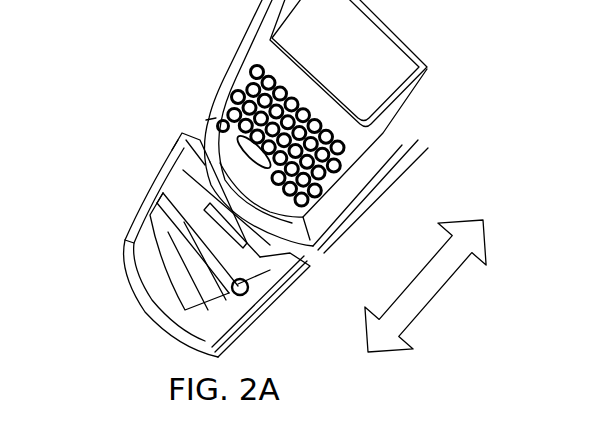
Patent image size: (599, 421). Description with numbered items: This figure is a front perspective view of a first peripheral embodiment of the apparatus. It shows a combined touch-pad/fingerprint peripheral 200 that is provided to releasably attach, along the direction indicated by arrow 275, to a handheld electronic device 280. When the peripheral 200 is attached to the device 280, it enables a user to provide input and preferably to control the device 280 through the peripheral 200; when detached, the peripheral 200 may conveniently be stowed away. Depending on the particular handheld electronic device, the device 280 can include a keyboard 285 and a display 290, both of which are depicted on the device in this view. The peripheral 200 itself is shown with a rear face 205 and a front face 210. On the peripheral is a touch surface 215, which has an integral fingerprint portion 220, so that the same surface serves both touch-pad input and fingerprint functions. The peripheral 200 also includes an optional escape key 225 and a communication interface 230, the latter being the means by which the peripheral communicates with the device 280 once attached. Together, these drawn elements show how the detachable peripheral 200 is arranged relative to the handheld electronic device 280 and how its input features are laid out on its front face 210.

The combined touch-pad/fingerprint peripheral 200 is at (100, 175).
The rear face 205 is at (250, 338).
The front face 210 is at (128, 237).
The touch surface 215 is at (143, 255).
The fingerprint portion 220 is at (163, 292).
The escape key 225 is at (250, 292).
The communication interface 230 is at (178, 188).
The arrow 275 is at (428, 297).
The handheld electronic device 280 is at (208, 50).
The keyboard 285 is at (340, 130).
The display 290 is at (374, 70).